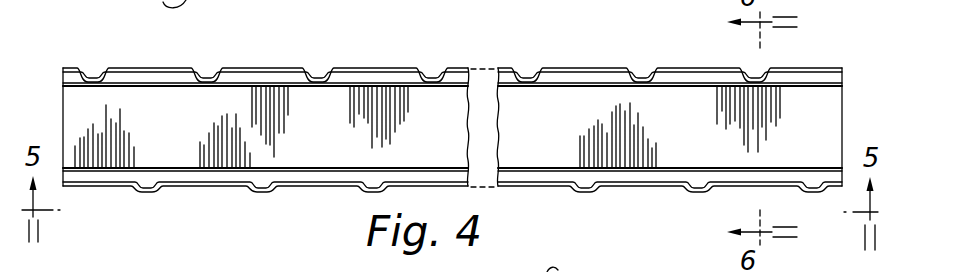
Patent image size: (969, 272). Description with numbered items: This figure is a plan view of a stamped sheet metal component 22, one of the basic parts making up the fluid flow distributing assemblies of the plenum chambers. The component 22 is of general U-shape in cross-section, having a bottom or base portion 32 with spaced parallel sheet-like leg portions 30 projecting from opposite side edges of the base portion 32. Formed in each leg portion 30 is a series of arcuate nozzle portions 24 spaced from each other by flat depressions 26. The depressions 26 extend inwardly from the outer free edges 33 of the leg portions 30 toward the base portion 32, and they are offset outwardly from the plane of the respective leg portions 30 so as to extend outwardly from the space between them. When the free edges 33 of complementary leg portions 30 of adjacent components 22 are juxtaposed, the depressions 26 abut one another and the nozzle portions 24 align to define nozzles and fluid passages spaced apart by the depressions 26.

The sheet metal component 22 is at (512, 69).
The nozzle portions 24 is at (205, 82).
The depressions 26 is at (303, 68).
The leg portions 30 is at (564, 85).
The base portion 32 is at (830, 122).
The free edges 33 is at (158, 68).